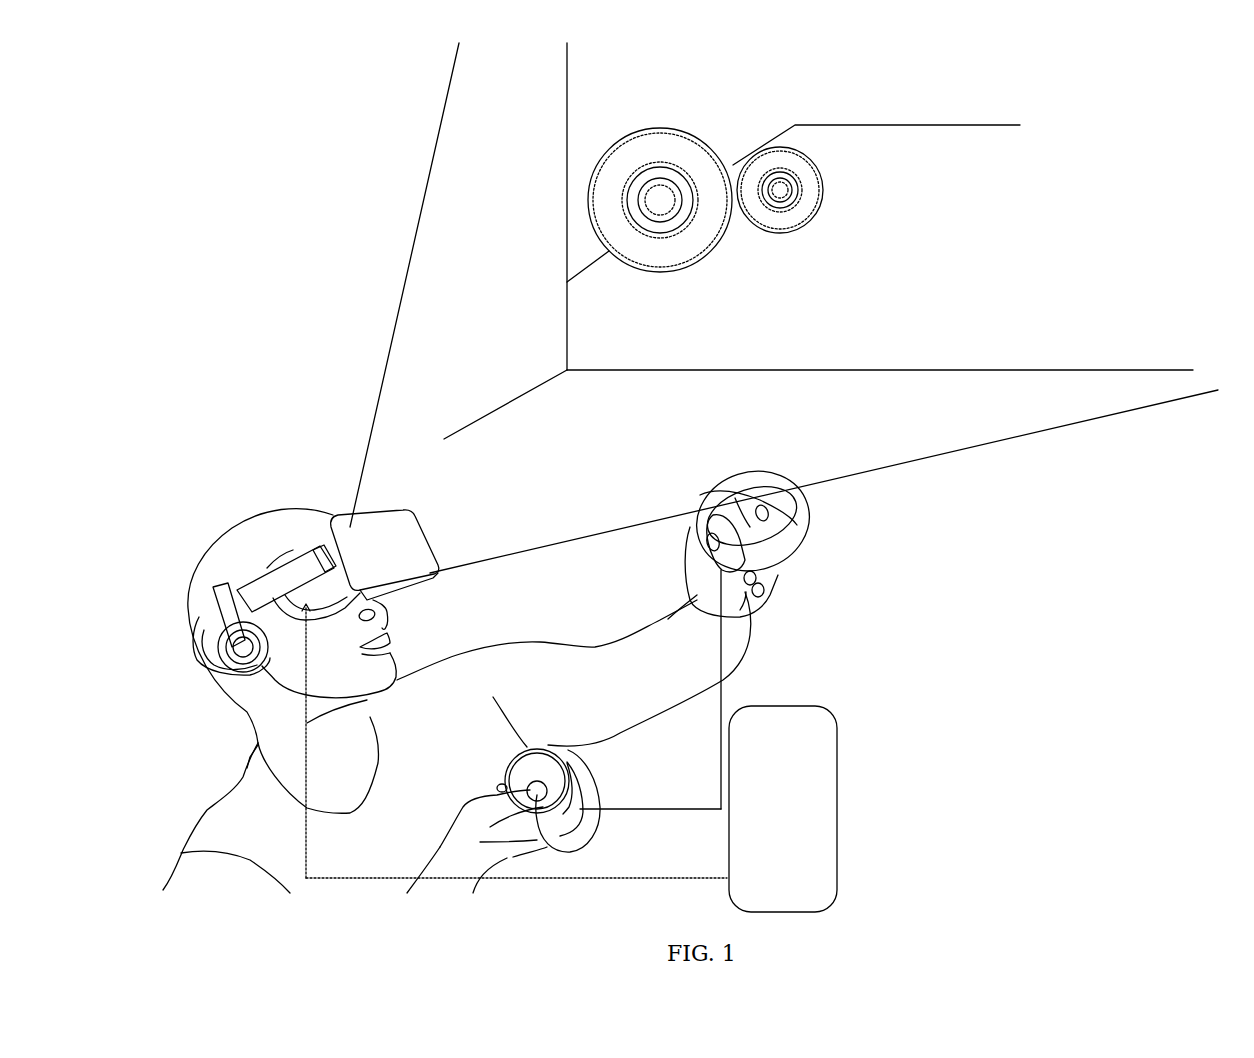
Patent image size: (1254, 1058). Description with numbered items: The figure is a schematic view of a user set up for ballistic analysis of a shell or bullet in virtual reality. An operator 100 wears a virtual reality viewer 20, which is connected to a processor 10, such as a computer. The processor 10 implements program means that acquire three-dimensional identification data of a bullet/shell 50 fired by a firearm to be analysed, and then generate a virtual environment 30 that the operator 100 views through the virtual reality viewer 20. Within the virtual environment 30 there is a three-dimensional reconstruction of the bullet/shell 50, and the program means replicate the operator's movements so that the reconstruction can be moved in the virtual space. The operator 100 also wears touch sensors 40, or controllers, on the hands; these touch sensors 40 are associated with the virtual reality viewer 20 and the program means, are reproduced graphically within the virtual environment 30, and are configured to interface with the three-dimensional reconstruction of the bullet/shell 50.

The processor 10 is at (825, 840).
The virtual reality viewer 20 is at (335, 520).
The virtual environment 30 is at (913, 268).
The touch sensors 40 is at (788, 555).
The bullet/shell 50 is at (677, 146).
The operator 100 is at (210, 558).